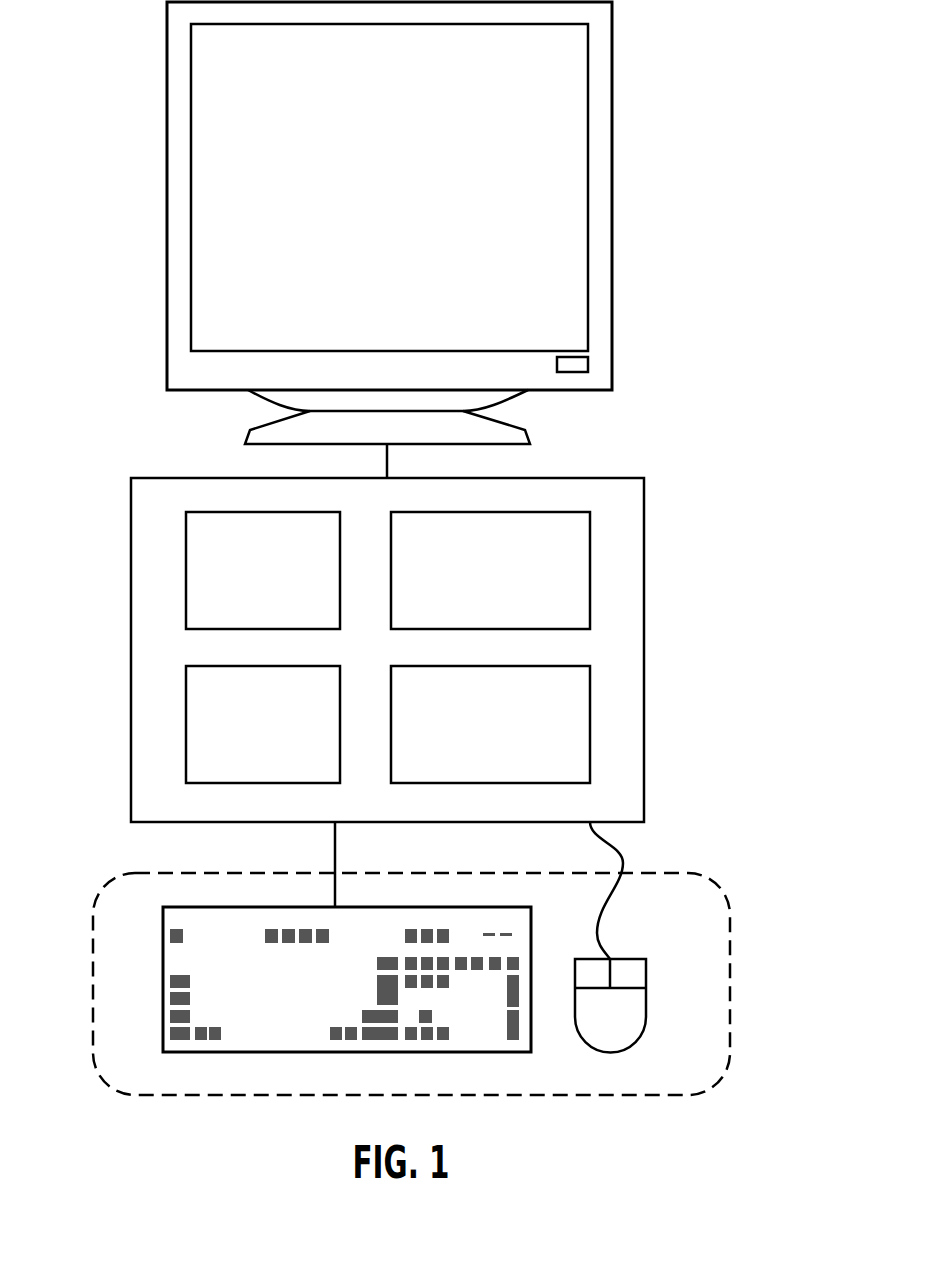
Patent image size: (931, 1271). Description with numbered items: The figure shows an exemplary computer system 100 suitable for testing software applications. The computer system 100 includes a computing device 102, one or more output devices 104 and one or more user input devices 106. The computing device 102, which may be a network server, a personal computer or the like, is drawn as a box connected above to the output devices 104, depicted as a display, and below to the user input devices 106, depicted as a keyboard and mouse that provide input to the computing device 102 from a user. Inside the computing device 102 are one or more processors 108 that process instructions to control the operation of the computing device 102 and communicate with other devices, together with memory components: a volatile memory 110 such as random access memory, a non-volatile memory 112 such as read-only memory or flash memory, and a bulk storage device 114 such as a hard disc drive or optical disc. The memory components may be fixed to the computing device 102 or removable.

The computer system 100 is at (697, 668).
The computing device 102 is at (215, 477).
The output devices 104 is at (166, 349).
The user input devices 106 is at (660, 873).
The processors 108 is at (243, 595).
The volatile memory 110 is at (243, 751).
The non-volatile memory 112 is at (470, 751).
The bulk storage device 114 is at (470, 595).